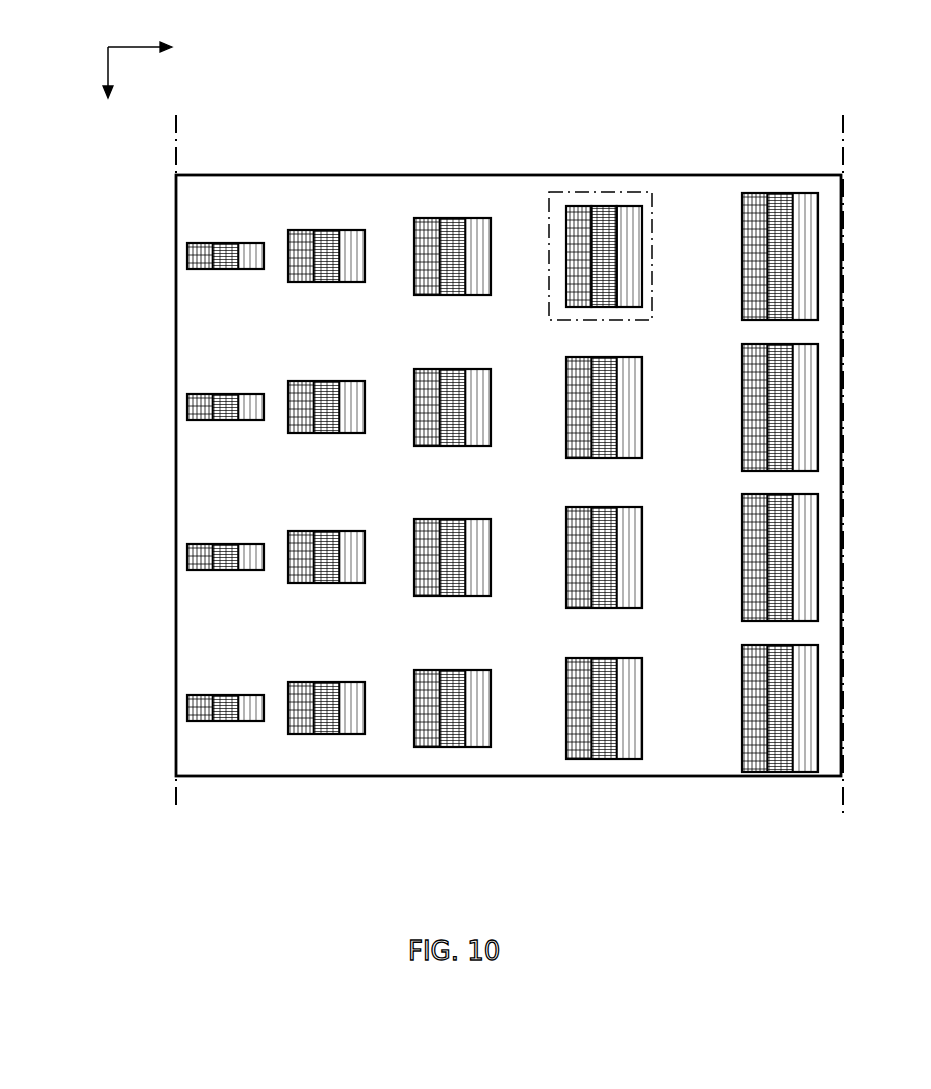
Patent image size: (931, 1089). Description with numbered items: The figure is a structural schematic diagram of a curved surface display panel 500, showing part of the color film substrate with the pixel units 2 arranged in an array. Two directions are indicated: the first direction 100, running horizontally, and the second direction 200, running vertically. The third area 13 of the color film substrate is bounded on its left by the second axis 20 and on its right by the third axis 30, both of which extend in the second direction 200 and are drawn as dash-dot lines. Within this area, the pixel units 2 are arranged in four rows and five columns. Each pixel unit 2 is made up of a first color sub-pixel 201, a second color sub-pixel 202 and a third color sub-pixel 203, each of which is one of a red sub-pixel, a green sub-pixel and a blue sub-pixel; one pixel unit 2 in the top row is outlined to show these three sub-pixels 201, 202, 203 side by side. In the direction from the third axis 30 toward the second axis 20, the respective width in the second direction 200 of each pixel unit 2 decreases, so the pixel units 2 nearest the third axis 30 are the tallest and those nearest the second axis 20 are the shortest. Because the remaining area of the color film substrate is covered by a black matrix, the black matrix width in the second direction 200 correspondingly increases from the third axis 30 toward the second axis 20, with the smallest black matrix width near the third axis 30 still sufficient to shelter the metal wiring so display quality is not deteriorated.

The first direction 100 is at (140, 29).
The second direction 200 is at (75, 72).
The second axis 20 is at (176, 435).
The third axis 30 is at (831, 443).
The display panel 500 is at (857, 46).
The third area 13 is at (463, 762).
The pixel unit 2 is at (678, 108).
The first color sub-pixel 201 is at (580, 232).
The second color sub-pixel 202 is at (602, 223).
The third color sub-pixel 203 is at (630, 228).